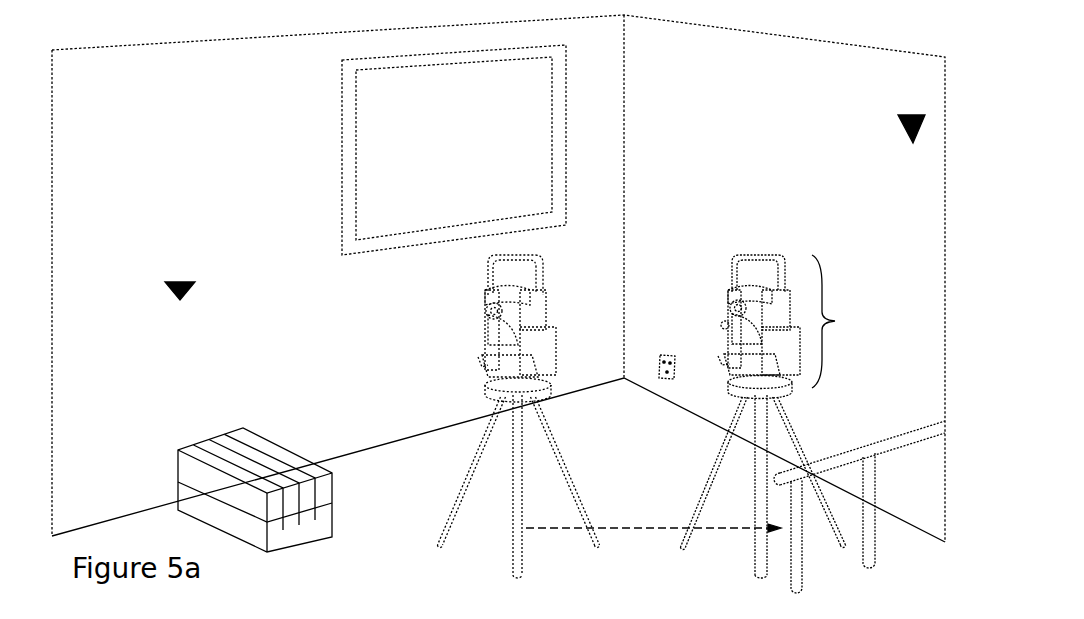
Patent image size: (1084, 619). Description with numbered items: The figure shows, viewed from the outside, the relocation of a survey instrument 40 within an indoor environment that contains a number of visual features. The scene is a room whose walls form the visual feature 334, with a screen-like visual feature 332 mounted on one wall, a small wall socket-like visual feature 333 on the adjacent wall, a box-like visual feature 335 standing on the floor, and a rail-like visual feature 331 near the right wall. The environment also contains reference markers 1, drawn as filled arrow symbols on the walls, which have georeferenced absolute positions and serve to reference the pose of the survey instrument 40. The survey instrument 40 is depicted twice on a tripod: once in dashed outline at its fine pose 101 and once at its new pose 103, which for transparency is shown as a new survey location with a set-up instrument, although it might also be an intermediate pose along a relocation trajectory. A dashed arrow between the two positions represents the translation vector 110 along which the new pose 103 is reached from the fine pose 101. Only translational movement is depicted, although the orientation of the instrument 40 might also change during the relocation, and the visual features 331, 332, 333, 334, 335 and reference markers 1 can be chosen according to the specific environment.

The reference marker 1 is at (180, 280).
The survey instrument 40 is at (839, 321).
The fine pose 101 is at (513, 522).
The new pose 103 is at (757, 527).
The translation vector 110 is at (660, 525).
The visual feature 331 is at (858, 447).
The visual feature 332 is at (346, 80).
The visual feature 333 is at (665, 356).
The visual feature 334 is at (624, 17).
The visual feature 335 is at (232, 432).